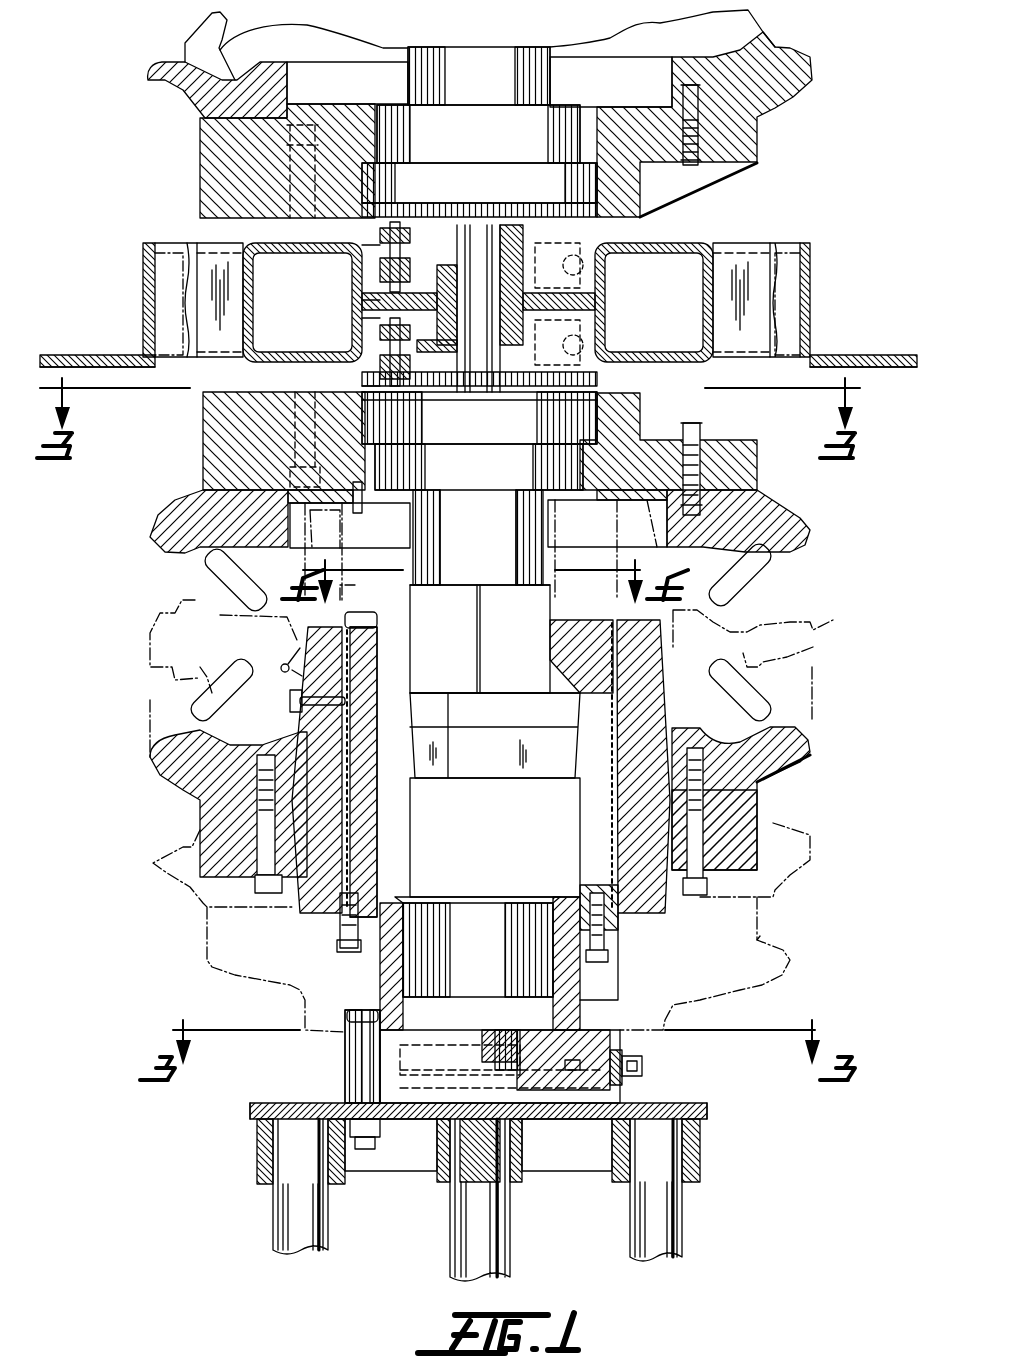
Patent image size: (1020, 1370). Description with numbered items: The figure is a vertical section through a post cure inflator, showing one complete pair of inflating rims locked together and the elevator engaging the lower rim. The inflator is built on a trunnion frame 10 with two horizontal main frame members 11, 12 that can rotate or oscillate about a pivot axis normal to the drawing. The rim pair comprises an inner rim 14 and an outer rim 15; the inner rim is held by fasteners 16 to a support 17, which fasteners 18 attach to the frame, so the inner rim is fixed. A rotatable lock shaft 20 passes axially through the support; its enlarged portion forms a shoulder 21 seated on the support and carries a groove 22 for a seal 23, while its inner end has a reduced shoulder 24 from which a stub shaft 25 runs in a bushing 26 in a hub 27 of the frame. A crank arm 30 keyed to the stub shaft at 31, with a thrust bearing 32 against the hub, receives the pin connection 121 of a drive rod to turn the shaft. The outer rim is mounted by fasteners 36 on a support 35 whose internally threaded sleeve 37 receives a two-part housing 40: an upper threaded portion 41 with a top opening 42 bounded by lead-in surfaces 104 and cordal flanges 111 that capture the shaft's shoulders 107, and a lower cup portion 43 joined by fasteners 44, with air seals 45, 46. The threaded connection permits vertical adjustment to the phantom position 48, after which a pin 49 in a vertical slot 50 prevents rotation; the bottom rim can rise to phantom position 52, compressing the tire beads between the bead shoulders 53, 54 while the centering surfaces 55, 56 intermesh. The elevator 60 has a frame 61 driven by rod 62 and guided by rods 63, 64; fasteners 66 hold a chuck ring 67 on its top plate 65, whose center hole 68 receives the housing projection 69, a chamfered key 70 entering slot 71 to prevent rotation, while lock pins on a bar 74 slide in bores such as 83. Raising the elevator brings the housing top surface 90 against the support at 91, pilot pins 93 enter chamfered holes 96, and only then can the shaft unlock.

The trunnion frame 10 is at (748, 240).
The horizontal main frame member 11 is at (250, 266).
The horizontal main frame member 12 is at (688, 243).
The inner rim 14 is at (800, 520).
The outer rim 15 is at (812, 758).
The fasteners 16 is at (700, 432).
The support 17 is at (758, 474).
The fasteners 18 is at (270, 400).
The lock shaft 20 is at (558, 556).
The shoulder 21 is at (470, 442).
The groove 22 is at (470, 398).
The seal 23 is at (612, 397).
The reduced diameter shoulder 24 is at (525, 375).
The stub shaft 25 is at (553, 266).
The bushing 26 is at (400, 265).
The hub 27 is at (522, 280).
The crank arm 30 is at (385, 352).
The key 31 is at (458, 350).
The thrust bearing 32 is at (440, 330).
The support 35 is at (758, 812).
The fasteners 36 is at (697, 895).
The internally threaded cylindrical sleeve portion 37 is at (660, 712).
The two-part cylindrical housing 40 is at (578, 828).
The upper portion of housing 41 is at (378, 815).
The top opening 42 is at (400, 625).
The lower cup-shape portion of housing 43 is at (620, 1003).
The fasteners 44 is at (610, 955).
The air seal 45 is at (580, 900).
The air seal 46 is at (340, 920).
The phantom line position 48 is at (772, 940).
The pin 49 is at (290, 703).
The vertical slot 50 is at (348, 830).
The phantom line position 52 is at (822, 620).
The bead shoulders 53 is at (150, 535).
The bracket 54 is at (168, 740).
The inclined pilot and centering surface 55 is at (205, 572).
The inclined pilot and centering surface 56 is at (205, 705).
The elevator 60 is at (672, 1095).
The frame 61 is at (565, 1165).
The rod 62 is at (500, 1233).
The guide rod 63 is at (328, 1233).
The guide rod 64 is at (683, 1233).
The top plate 65 is at (250, 1106).
The fasteners 66 is at (352, 1018).
The annular chuck ring 67 is at (345, 1065).
The center hole 68 is at (545, 1040).
The projection 69 is at (512, 1050).
The diametral key 70 is at (580, 1092).
The diametral slot 71 is at (540, 1092).
The bar 74 is at (628, 1062).
The bore 83 is at (614, 1090).
The top surface 90 is at (370, 628).
The contact location 91 is at (590, 508).
The pilot pins 93 is at (365, 512).
The chamfered holes 96 is at (345, 619).
The pilot lead-in surfaces 104 is at (378, 650).
The shoulder 107 is at (565, 688).
The cordal flange 111 is at (560, 695).
The pin connection 121 is at (385, 330).